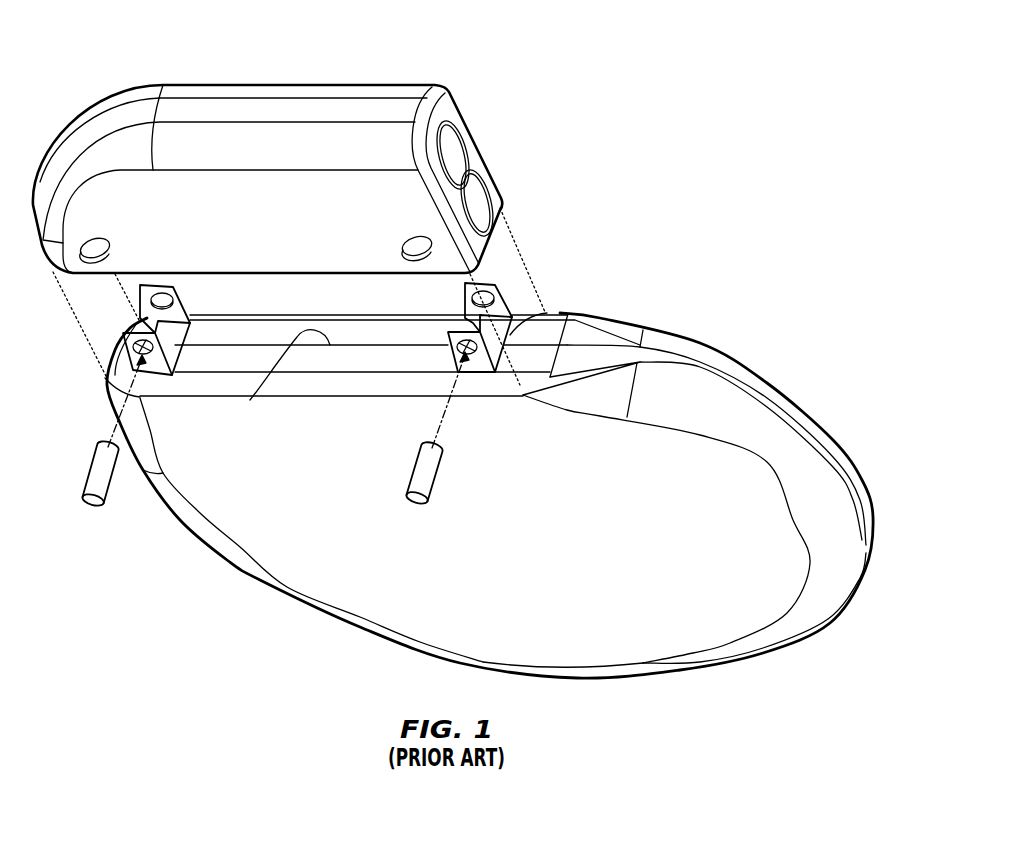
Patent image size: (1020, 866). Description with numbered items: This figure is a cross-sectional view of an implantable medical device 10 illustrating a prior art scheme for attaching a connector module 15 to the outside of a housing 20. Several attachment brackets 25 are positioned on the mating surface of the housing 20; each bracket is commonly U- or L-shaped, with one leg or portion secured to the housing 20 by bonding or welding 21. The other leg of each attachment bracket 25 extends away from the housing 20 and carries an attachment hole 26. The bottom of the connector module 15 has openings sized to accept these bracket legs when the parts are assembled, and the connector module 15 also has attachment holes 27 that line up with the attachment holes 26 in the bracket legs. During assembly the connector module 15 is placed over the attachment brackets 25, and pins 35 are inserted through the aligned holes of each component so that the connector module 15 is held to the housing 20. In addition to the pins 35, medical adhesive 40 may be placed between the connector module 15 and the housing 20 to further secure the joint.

The implantable medical device 10 is at (663, 112).
The connector module 15 is at (207, 85).
The housing 20 is at (215, 513).
The bonding or welding 21 is at (573, 300).
The attachment brackets 25 is at (115, 350).
The attachment hole 26 is at (477, 374).
The attachment holes 27 is at (110, 253).
The pins 35 is at (85, 452).
The medical adhesive 40 is at (250, 400).